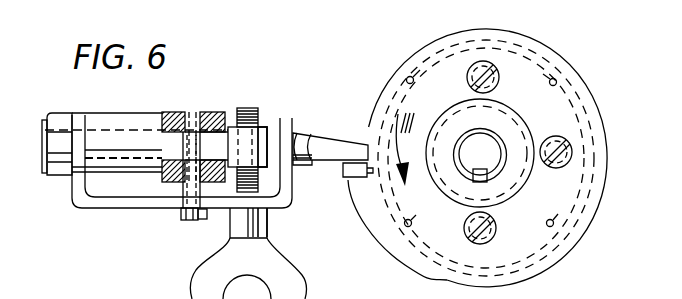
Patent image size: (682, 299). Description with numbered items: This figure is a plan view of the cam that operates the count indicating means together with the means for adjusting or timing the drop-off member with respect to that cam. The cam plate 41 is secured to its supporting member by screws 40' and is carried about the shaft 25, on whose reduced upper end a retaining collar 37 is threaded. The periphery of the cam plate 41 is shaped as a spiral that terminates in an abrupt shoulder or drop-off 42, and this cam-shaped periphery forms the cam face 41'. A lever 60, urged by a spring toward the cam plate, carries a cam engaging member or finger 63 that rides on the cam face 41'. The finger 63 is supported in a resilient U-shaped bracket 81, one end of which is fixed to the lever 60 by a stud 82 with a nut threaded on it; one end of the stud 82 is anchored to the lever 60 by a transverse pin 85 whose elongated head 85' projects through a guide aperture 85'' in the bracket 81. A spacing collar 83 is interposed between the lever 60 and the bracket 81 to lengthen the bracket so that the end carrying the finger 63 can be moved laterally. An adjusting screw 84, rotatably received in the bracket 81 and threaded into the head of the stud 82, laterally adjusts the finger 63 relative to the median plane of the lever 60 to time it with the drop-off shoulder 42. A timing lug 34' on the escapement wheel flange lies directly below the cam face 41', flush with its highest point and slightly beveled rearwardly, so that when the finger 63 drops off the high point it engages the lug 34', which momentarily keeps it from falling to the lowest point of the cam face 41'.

The stud 82 is at (60, 113).
The spacing collar 83 is at (107, 116).
The lever 60 is at (215, 109).
The cam engaging member or finger 63 is at (320, 138).
The resilient U-shaped bracket 81 is at (106, 208).
The transverse pin 85 is at (157, 170).
The elongated head 85' is at (165, 228).
The guide aperture 85'' is at (192, 224).
The adjusting screw 84 is at (233, 224).
The drop-off shoulder 42 is at (352, 166).
The timing lug 34' is at (388, 229).
The cam plate 41 is at (507, 158).
The cam face 41' is at (511, 158).
The retaining collar 37 is at (511, 198).
The shaft 25 is at (493, 160).
The screws 40' is at (501, 163).